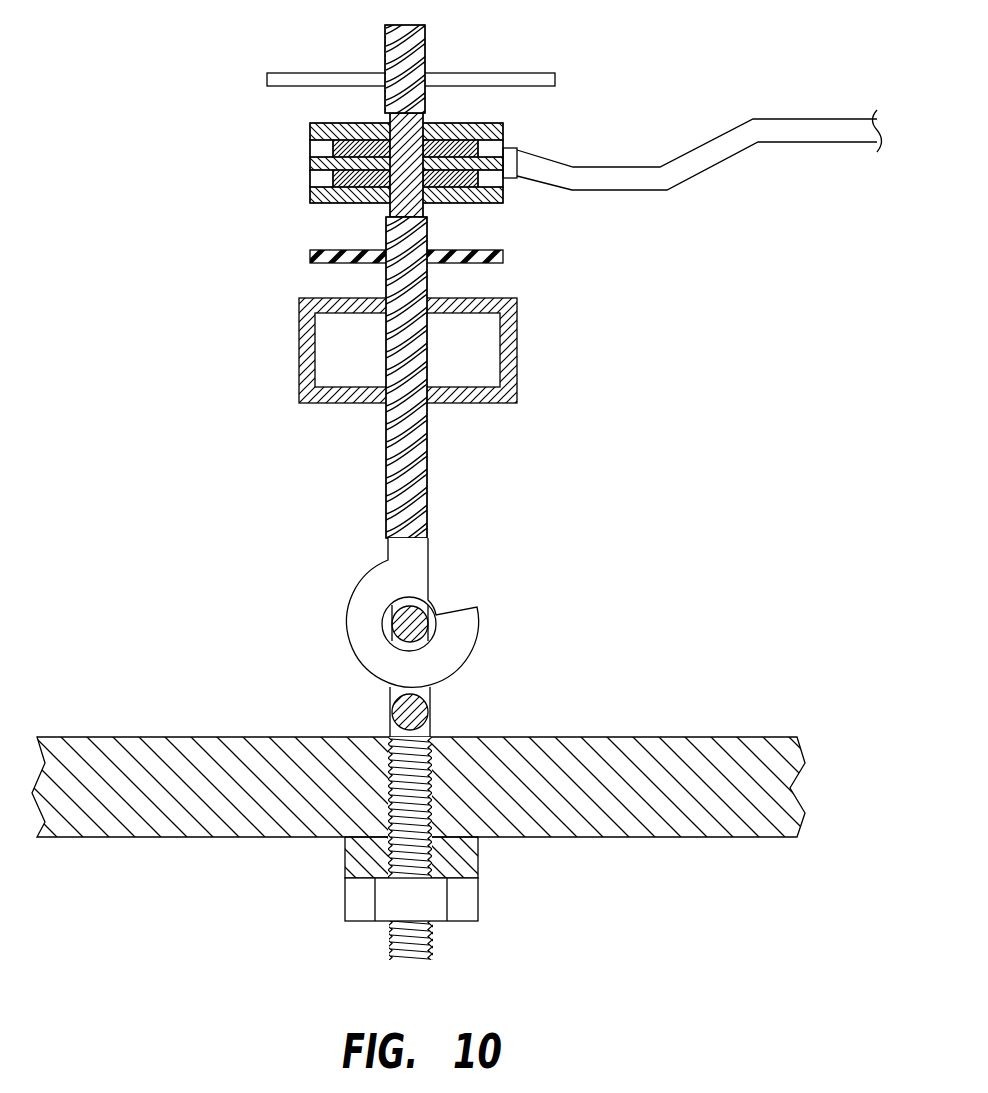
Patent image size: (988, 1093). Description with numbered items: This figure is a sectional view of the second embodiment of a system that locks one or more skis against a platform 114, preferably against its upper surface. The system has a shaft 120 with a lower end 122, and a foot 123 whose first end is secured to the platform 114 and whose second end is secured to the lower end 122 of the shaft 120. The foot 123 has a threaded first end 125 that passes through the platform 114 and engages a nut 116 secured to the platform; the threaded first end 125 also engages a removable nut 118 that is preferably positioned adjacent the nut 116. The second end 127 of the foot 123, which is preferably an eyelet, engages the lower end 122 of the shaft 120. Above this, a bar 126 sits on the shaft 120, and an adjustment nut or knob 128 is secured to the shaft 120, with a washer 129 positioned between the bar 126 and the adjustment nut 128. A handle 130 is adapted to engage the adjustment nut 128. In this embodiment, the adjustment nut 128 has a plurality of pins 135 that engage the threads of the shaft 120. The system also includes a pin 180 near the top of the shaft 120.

The platform 114 is at (760, 768).
The nut 116 is at (352, 862).
The removable nut 118 is at (465, 897).
The shaft 120 is at (410, 465).
The lower end 122 is at (458, 633).
The foot 123 is at (437, 693).
The first end 125 is at (432, 853).
The bar 126 is at (517, 352).
The second end 127 is at (402, 712).
The adjustment nut 128 is at (317, 163).
The washer 129 is at (503, 256).
The handle 130 is at (800, 142).
The pins 135 is at (445, 147).
The pin 180 is at (505, 78).